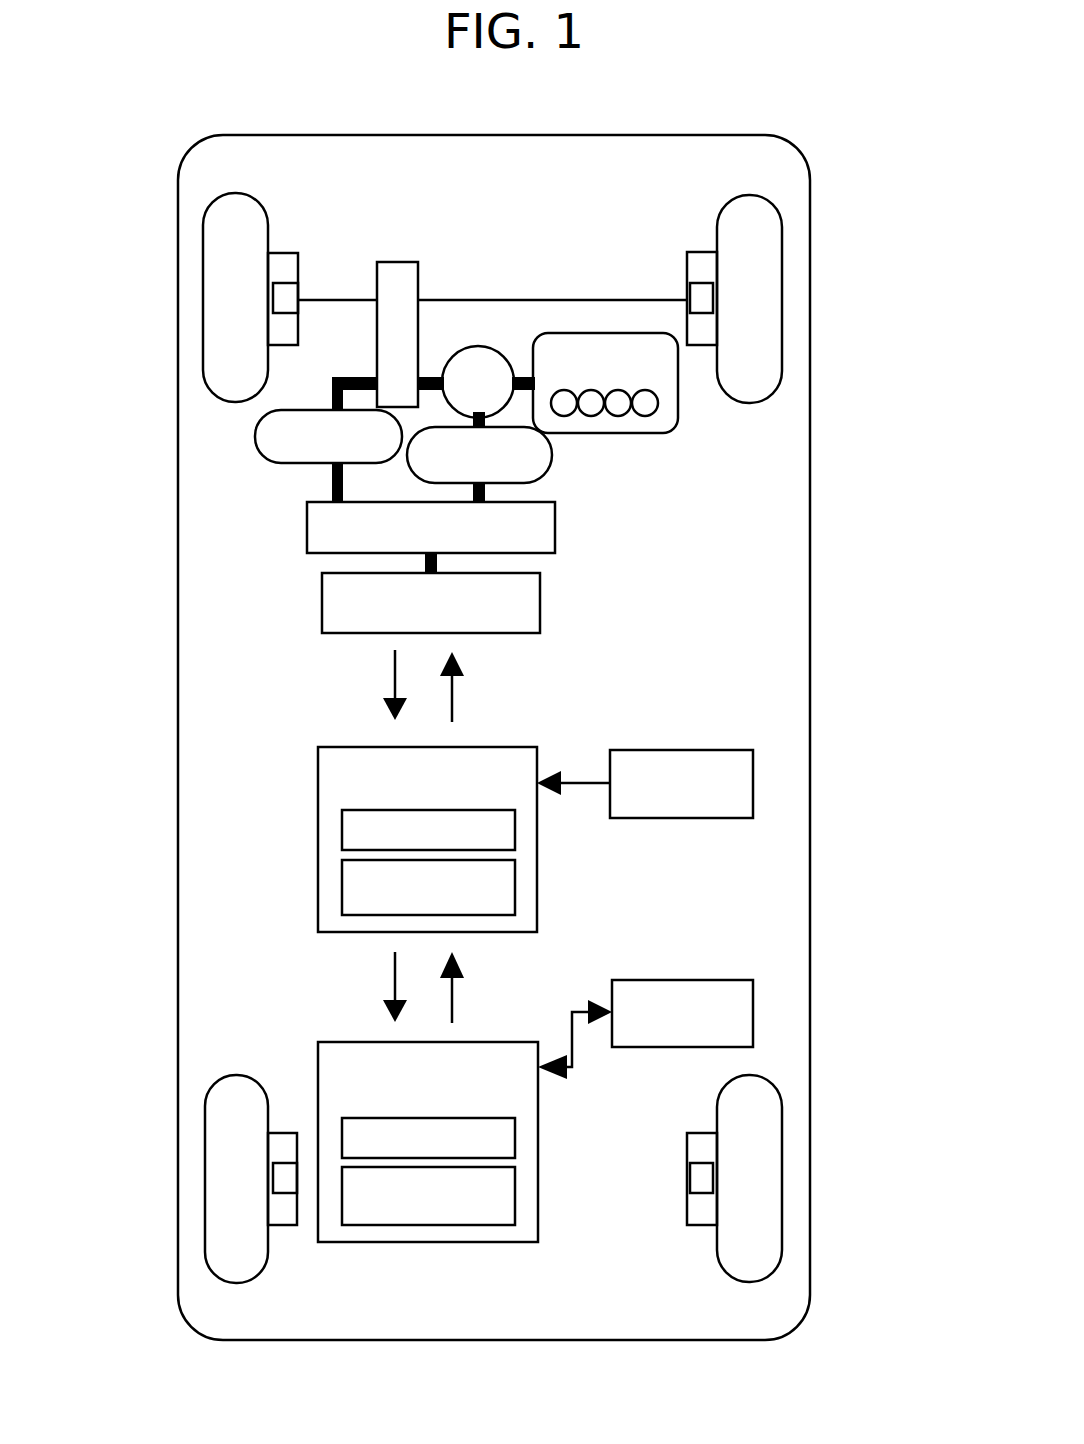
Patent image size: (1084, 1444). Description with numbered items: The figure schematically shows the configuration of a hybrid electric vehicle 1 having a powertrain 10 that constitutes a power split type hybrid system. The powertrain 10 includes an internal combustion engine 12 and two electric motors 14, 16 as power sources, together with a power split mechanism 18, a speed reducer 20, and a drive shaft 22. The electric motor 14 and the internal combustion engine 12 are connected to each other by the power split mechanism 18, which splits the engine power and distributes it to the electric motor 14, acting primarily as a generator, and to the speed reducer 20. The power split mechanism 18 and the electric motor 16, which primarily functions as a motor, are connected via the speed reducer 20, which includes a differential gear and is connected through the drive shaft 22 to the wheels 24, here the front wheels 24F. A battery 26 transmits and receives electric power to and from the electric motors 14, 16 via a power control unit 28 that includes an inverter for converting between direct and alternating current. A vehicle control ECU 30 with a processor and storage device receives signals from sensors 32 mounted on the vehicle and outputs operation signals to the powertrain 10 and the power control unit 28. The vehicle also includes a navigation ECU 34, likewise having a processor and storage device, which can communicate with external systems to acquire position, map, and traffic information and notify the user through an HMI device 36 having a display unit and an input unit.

The hybrid electric vehicle 1 is at (816, 122).
The powertrain 10 is at (262, 482).
The internal combustion engine 12 is at (640, 433).
The electric motor 14 is at (552, 453).
The electric motor 16 is at (315, 463).
The power split mechanism 18 is at (446, 360).
The speed reducer 20 is at (418, 272).
The drive shaft 22 is at (532, 300).
The wheels 24 is at (499, 738).
The front wheels 24F is at (203, 276).
The battery 26 is at (540, 603).
The power control unit (PCU) 28 is at (557, 527).
The vehicle control ECU 30 is at (502, 747).
The sensors 32 is at (683, 750).
The navigation ECU 34 is at (502, 1042).
The HMI device 36 is at (688, 980).